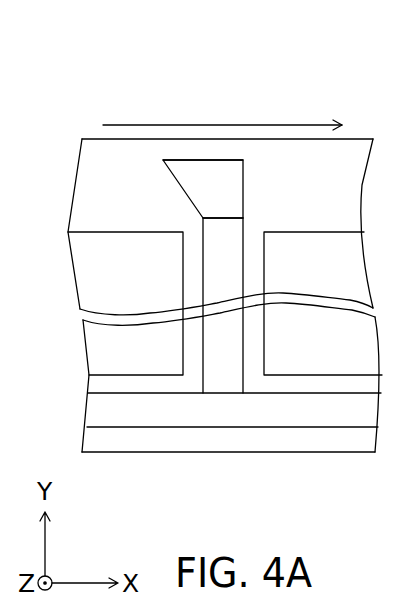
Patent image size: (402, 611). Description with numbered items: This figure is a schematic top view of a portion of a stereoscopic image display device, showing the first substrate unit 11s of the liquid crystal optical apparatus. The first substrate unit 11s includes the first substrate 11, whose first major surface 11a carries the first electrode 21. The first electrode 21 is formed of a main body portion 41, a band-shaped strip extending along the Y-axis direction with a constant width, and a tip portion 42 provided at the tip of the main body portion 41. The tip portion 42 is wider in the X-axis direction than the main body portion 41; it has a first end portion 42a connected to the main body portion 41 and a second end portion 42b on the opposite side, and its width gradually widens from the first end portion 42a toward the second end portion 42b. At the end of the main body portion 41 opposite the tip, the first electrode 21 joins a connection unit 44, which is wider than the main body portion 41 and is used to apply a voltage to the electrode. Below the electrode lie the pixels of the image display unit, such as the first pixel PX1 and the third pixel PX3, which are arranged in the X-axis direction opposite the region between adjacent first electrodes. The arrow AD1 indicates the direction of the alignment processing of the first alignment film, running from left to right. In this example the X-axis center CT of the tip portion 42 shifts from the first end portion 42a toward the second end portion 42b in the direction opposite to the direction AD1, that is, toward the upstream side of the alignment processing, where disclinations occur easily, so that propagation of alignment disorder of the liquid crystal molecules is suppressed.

The first substrate 11 is at (290, 455).
The first major surface 11a is at (100, 163).
The first substrate unit 11s is at (352, 140).
The first electrode 21 is at (230, 221).
The main body portion 41 is at (228, 233).
The tip portion 42 is at (228, 170).
The first end portion 42a is at (215, 219).
The second end portion 42b is at (182, 160).
The connection unit 44 is at (177, 410).
The center of the tip portion CT is at (222, 213).
The direction of the alignment processing AD1 is at (315, 123).
The first pixel PX1 is at (325, 375).
The third pixel PX3 is at (113, 375).